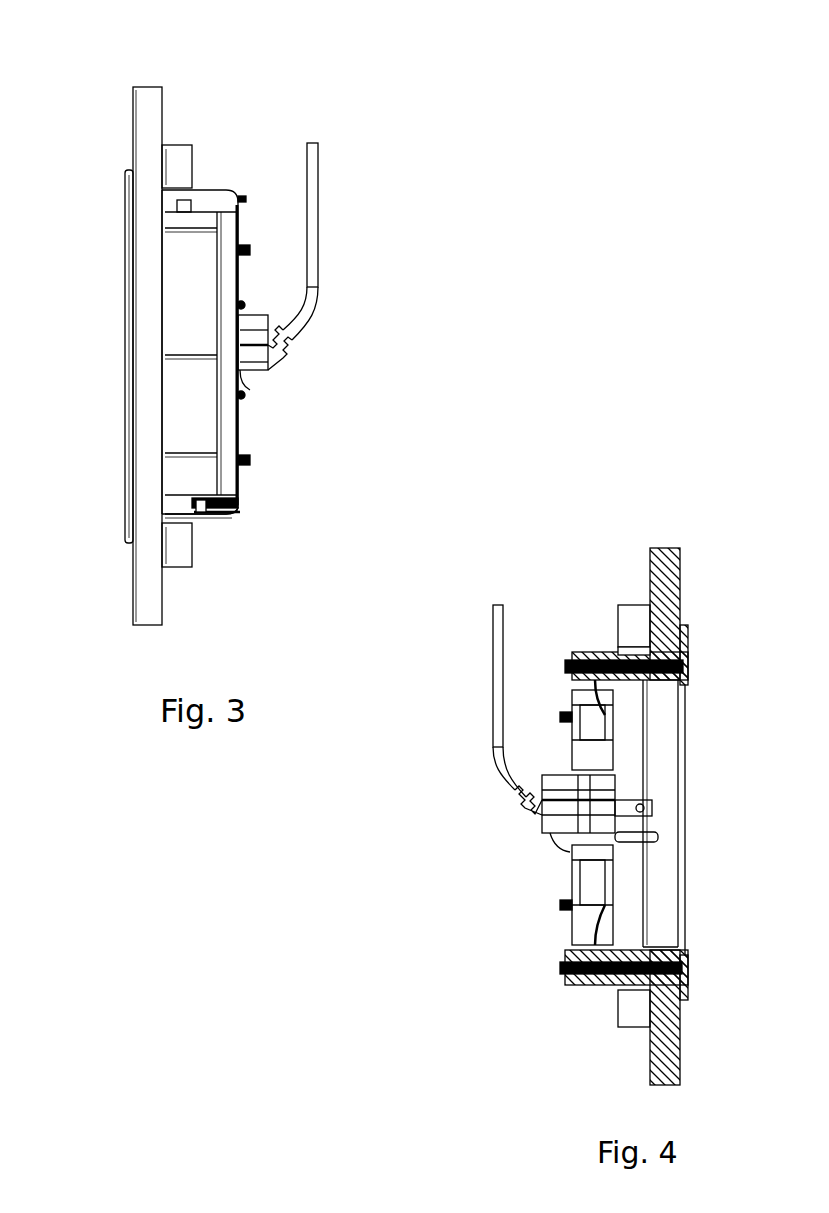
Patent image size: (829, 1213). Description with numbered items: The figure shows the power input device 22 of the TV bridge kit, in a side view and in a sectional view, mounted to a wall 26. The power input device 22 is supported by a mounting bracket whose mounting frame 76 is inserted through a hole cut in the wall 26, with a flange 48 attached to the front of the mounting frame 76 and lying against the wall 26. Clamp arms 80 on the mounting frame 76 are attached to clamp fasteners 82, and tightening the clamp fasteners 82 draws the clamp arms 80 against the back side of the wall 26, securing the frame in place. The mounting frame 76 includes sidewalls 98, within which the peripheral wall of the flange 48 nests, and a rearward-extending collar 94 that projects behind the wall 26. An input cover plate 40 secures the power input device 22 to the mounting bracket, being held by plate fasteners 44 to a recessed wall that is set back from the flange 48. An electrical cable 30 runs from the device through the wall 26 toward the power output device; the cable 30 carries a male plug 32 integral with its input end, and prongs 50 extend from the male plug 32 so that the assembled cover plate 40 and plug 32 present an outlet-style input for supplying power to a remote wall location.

In FIG. 3, the power input device 22 is at (447, 240).
In FIG. 4, the power input device 22 is at (432, 845).
In FIG. 3, the wall 26 is at (148, 87).
In FIG. 4, the wall 26 is at (665, 548).
In FIG. 3, the electrical cable 30 is at (318, 190).
In FIG. 4, the electrical cable 30 is at (490, 676).
In FIG. 3, the male plug 32 is at (268, 370).
In FIG. 4, the male plug 32 is at (545, 830).
In FIG. 4, the input cover plate 40 is at (612, 743).
In FIG. 4, the plate fasteners 44 is at (612, 910).
In FIG. 3, the flange 48 is at (128, 535).
In FIG. 4, the flange 48 is at (683, 630).
In FIG. 4, the prongs 50 is at (652, 808).
In FIG. 3, the mounting frame 76 is at (215, 520).
In FIG. 4, the mounting frame 76 is at (585, 652).
In FIG. 3, the clamp arms 80 is at (192, 160).
In FIG. 4, the clamp arms 80 is at (618, 628).
In FIG. 3, the clamp fasteners 82 is at (243, 512).
In FIG. 3, the rearward-extending collar 94 is at (230, 482).
In FIG. 3, the sidewalls 98 is at (201, 317).